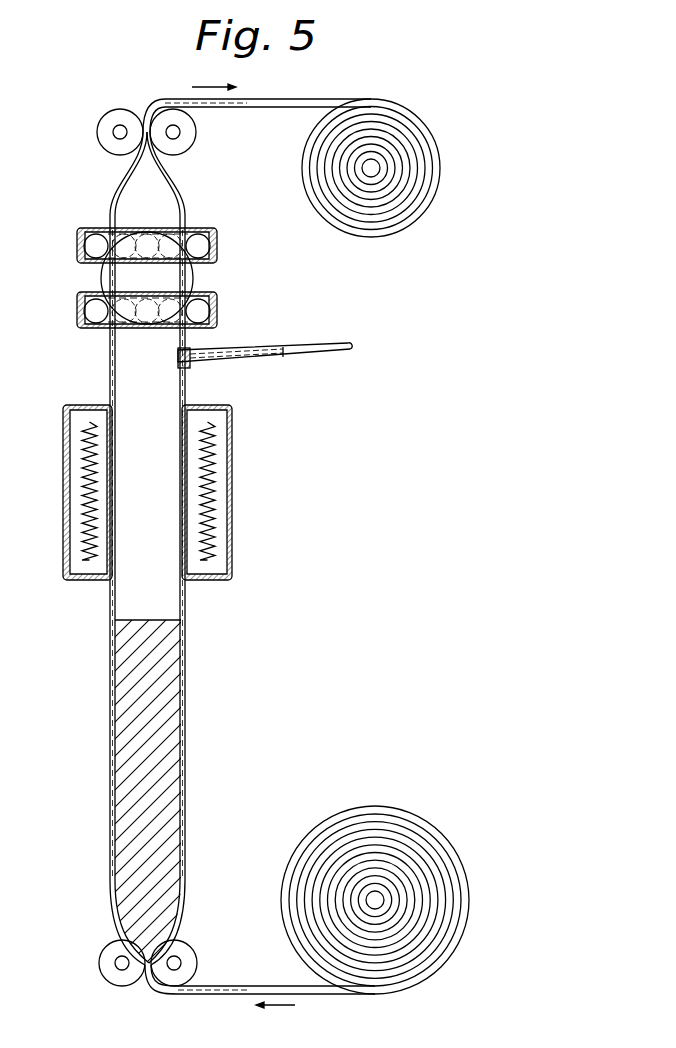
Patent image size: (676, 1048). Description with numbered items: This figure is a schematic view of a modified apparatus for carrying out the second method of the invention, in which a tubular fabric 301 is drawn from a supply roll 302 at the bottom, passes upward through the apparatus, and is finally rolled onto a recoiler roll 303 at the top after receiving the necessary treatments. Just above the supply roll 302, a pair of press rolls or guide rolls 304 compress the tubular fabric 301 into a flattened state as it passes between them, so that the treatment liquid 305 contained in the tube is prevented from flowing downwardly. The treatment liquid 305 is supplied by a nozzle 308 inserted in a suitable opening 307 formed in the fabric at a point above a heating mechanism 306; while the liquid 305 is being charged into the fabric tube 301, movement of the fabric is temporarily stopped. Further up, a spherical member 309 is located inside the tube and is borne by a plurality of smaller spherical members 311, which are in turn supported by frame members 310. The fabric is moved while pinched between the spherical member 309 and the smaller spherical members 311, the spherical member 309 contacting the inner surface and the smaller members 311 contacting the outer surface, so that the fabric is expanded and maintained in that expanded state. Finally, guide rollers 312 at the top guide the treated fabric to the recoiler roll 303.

The tubular fabric 301 is at (252, 985).
The supply roll 302 is at (377, 897).
The recoiler roll 303 is at (372, 177).
The press rolls 304 is at (110, 955).
The treatment liquid 305 is at (172, 695).
The heating mechanism 306 is at (218, 498).
The opening 307 is at (188, 368).
The nozzle 308 is at (275, 347).
The spherical member 309 is at (117, 280).
The frame members 310 is at (217, 261).
The smaller spherical members 311 is at (90, 245).
The guide rollers 312 is at (100, 139).